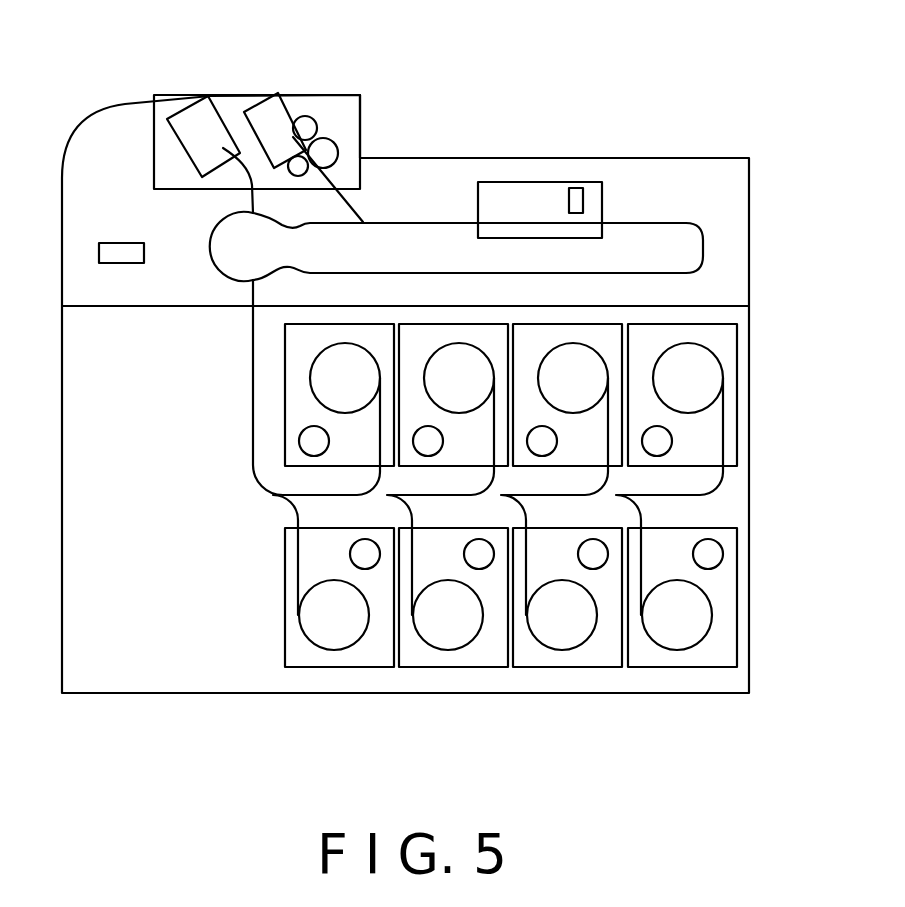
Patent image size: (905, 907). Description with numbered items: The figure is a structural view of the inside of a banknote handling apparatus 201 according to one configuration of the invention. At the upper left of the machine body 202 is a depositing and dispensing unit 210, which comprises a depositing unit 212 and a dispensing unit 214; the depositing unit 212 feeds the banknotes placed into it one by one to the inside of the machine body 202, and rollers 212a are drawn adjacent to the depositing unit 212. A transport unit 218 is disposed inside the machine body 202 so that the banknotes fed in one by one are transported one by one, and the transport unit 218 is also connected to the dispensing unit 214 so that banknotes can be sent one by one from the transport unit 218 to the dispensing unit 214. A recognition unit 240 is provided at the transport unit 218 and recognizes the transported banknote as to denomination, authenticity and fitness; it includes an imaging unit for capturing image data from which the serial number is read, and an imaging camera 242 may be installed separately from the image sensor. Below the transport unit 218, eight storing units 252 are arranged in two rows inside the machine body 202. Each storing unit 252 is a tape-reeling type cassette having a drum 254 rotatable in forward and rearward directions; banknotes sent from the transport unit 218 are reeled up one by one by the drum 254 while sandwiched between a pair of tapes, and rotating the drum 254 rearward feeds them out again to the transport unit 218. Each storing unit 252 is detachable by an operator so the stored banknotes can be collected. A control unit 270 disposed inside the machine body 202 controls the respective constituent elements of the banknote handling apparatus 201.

The banknote handling apparatus 201 is at (473, 63).
The machine body 202 is at (582, 156).
The depositing and dispensing unit 210 is at (160, 143).
The depositing unit 212 is at (268, 112).
The pump rollers 212a is at (313, 122).
The dispensing unit 214 is at (188, 117).
The transport unit 218 is at (402, 220).
The recognition unit 240 is at (505, 200).
The imaging camera 242 is at (584, 199).
The storing unit 252 is at (429, 335).
The drum 254 is at (553, 350).
The control unit 270 is at (122, 250).